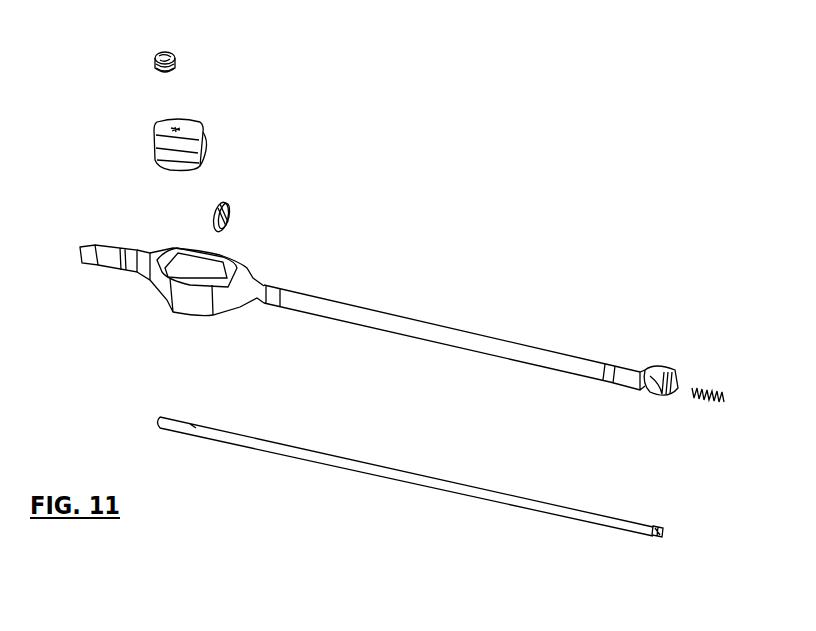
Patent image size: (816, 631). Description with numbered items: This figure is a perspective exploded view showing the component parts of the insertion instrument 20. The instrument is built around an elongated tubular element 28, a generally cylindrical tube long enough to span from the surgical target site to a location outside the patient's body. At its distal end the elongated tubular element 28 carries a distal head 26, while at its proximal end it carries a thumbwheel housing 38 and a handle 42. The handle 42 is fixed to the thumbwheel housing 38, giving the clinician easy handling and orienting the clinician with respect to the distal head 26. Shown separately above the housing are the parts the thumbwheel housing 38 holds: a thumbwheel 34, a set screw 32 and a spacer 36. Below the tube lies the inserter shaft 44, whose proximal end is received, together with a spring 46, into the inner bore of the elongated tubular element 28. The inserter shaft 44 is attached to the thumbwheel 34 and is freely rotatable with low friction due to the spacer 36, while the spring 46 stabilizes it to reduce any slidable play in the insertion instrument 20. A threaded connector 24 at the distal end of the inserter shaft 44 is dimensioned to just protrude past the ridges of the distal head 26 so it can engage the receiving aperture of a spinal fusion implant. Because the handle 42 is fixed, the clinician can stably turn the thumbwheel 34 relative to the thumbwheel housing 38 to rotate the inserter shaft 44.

The insertion instrument 20 is at (222, 510).
The threaded connector 24 is at (652, 538).
The distal head 26 is at (656, 368).
The elongated tubular element 28 is at (450, 330).
The set screw 32 is at (178, 56).
The thumbwheel 34 is at (205, 128).
The spacer 36 is at (230, 207).
The thumbwheel housing 38 is at (201, 300).
The handle 42 is at (95, 265).
The inserter shaft 44 is at (400, 474).
The spring 46 is at (716, 390).